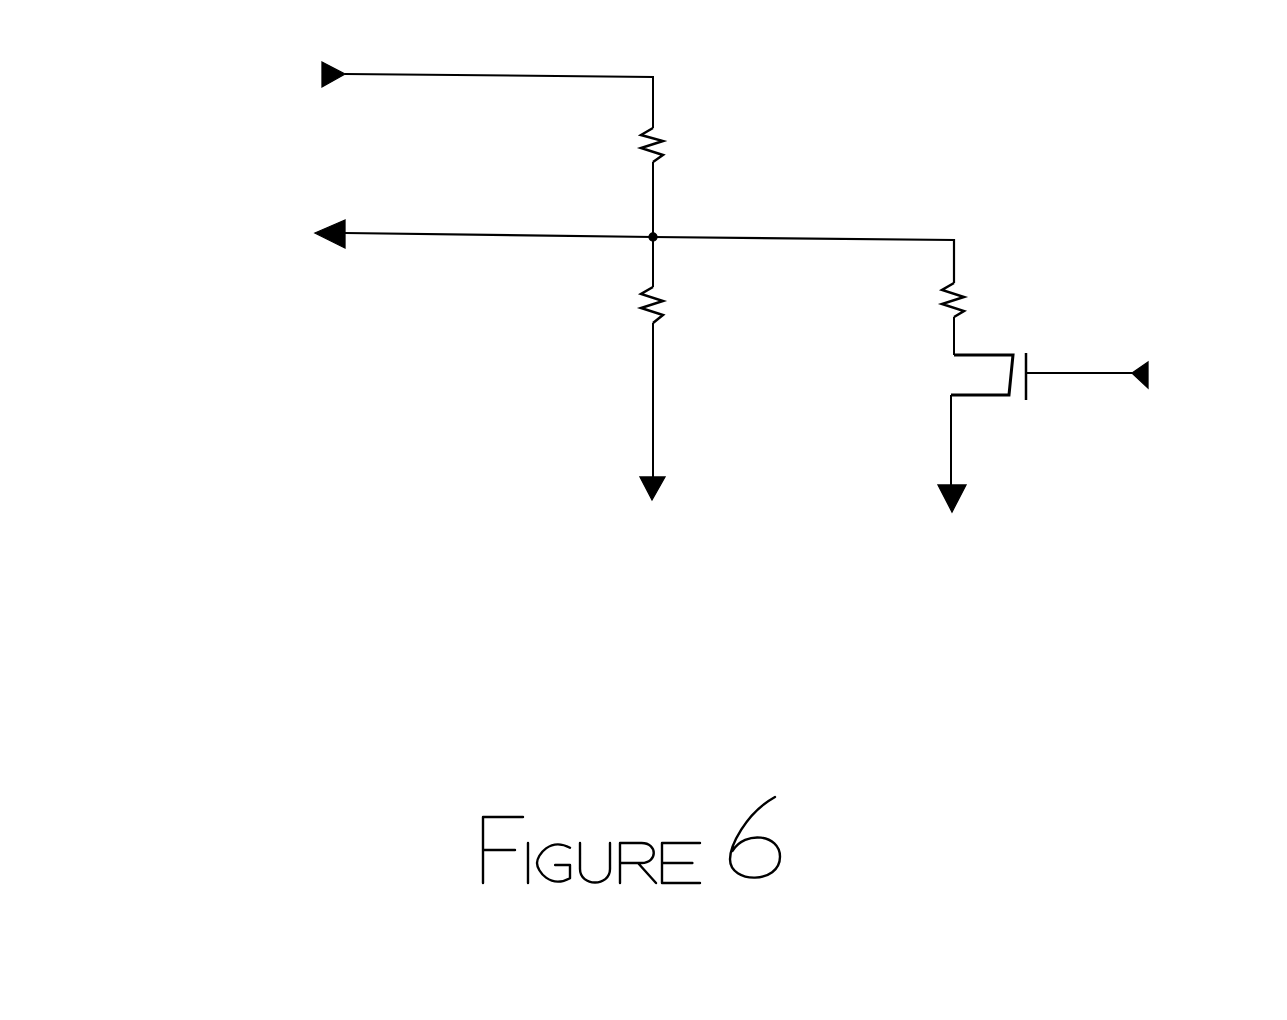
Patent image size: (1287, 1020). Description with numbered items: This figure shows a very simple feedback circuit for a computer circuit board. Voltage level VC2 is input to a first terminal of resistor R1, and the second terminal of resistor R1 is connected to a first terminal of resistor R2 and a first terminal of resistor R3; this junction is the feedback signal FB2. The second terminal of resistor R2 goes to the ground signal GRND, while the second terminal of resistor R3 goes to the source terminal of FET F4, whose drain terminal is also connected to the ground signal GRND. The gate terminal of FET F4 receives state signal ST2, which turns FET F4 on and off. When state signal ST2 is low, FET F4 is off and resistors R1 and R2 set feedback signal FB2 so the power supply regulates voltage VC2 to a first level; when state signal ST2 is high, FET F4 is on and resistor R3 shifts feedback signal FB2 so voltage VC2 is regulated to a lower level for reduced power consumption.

The voltage level VC2 is at (290, 98).
The feedback signal FB2 is at (302, 250).
The resistor R1 is at (715, 165).
The resistor R2 is at (721, 325).
The resistor R3 is at (1008, 316).
The FET F4 is at (935, 375).
The state signal ST2 is at (1270, 392).
The ground signal GRND is at (998, 560).